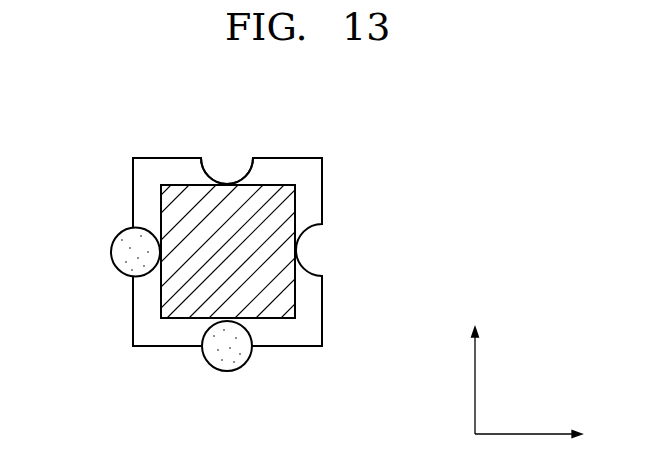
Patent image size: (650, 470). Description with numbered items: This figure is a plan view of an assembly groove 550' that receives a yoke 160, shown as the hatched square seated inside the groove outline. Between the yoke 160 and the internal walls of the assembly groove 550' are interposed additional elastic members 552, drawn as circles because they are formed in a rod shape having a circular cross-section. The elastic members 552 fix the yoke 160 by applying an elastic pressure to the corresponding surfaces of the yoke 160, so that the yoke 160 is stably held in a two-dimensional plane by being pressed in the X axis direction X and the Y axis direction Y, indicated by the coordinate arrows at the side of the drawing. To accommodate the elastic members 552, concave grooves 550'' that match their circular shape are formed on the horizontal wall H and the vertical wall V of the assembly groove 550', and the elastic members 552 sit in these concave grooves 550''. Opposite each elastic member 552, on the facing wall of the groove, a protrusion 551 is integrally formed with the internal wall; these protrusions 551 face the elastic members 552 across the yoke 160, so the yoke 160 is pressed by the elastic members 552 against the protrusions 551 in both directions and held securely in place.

The assembly groove 550' is at (227, 214).
The concave groove 550'' is at (193, 252).
The protrusion 551 is at (208, 172).
The elastic member 552 is at (122, 252).
The yoke 160 is at (287, 216).
The horizontal wall H is at (280, 158).
The vertical wall V is at (133, 193).
The X axis direction X is at (538, 434).
The Y axis direction Y is at (475, 368).